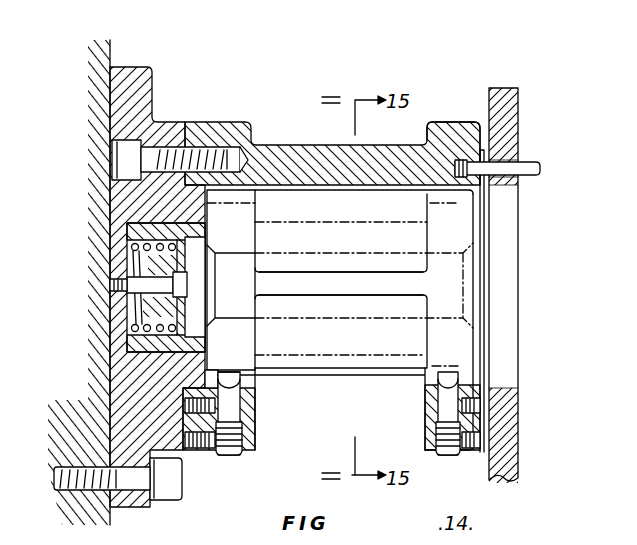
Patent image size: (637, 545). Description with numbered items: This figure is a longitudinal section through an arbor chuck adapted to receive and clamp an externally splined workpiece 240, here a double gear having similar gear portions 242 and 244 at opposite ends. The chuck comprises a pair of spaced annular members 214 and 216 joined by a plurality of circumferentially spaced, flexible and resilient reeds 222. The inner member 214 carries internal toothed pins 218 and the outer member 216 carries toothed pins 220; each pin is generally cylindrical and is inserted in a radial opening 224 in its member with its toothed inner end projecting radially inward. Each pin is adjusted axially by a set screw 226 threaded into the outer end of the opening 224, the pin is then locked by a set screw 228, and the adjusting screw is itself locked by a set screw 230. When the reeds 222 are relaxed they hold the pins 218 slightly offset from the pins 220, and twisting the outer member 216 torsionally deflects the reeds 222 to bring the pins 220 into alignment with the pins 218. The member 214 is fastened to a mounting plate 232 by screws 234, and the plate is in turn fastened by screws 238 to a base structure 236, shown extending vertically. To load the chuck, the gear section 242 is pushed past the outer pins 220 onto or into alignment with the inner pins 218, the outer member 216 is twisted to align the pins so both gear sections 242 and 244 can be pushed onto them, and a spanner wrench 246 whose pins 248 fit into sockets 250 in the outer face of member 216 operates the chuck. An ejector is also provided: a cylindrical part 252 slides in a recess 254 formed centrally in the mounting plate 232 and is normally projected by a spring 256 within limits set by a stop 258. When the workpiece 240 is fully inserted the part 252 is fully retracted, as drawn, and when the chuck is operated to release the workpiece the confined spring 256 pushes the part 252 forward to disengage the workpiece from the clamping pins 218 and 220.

The annular member 214 is at (200, 124).
The annular member 216 is at (445, 124).
The toothed pin 218 is at (238, 398).
The toothed pin 220 is at (438, 392).
The reed 222 is at (278, 152).
The radial opening 224 is at (235, 410).
The set screw 226 is at (244, 452).
The set screw 228 is at (190, 408).
The set screw 230 is at (190, 440).
The mounting plate 232 is at (145, 84).
The screw 234 is at (125, 161).
The base structure 236 is at (108, 52).
The screw 238 is at (166, 483).
The workpiece 240 is at (468, 230).
The gear portion 242 is at (245, 220).
The gear portion 244 is at (437, 210).
The spanner wrench 246 is at (508, 102).
The pin 248 is at (523, 167).
The socket 250 is at (508, 130).
The cylindrical part 252 is at (142, 263).
The recess 254 is at (145, 341).
The spring 256 is at (135, 246).
The stop 258 is at (128, 292).